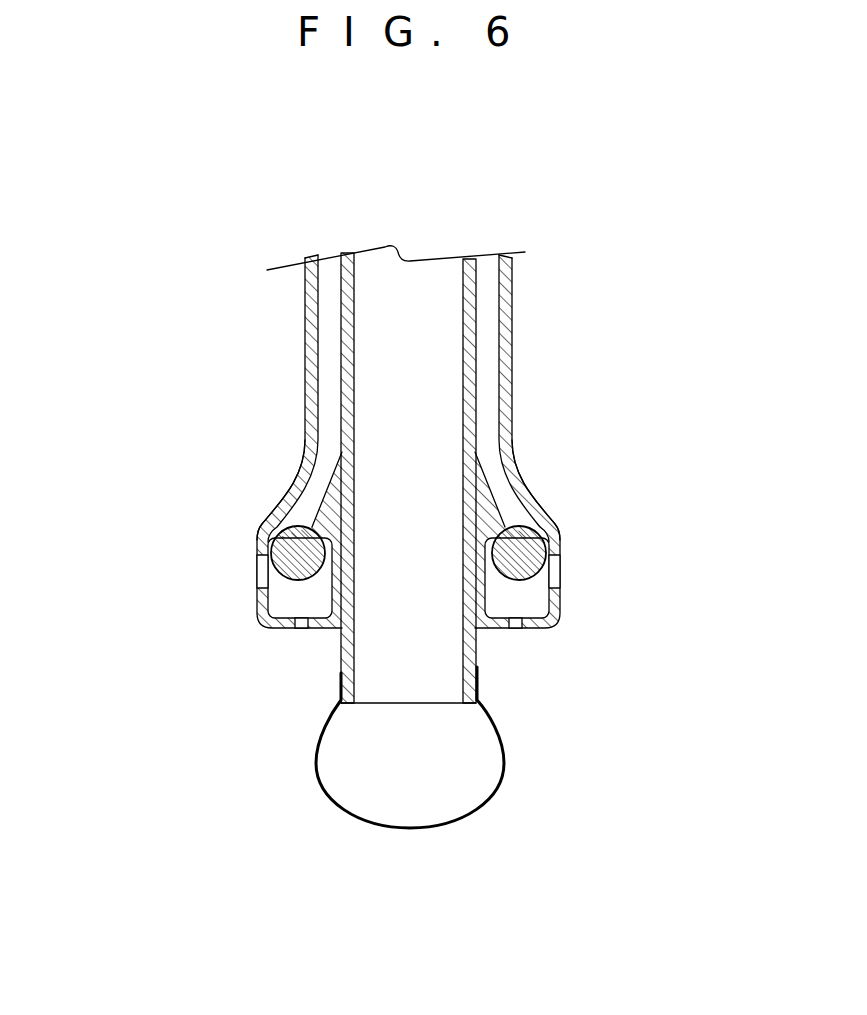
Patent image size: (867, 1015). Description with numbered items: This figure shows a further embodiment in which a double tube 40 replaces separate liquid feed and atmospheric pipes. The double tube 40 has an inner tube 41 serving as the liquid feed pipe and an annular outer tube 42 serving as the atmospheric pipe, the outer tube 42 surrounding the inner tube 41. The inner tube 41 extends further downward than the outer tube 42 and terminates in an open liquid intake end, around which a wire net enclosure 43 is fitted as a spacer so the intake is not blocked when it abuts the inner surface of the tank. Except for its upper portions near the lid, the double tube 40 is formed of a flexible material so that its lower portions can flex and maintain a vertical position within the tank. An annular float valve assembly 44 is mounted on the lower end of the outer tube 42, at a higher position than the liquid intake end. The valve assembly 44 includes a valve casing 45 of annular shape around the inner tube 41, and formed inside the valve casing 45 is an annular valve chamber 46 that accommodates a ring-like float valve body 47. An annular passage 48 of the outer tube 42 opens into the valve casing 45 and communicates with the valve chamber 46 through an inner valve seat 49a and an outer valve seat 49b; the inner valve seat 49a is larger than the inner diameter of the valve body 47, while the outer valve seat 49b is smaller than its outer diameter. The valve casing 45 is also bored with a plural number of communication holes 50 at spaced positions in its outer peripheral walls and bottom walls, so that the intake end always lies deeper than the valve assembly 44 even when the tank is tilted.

The double tube 40 is at (288, 325).
The inner tube 41 is at (472, 370).
The outer tube 42 is at (508, 308).
The wire net enclosure 43 is at (485, 813).
The float valve assembly 44 is at (568, 632).
The valve casing 45 is at (260, 622).
The valve chamber 46 is at (280, 603).
The float valve body 47 is at (258, 547).
The annular passage 48 is at (300, 520).
The inner valve seat 49a is at (506, 522).
The outer valve seat 49b is at (290, 532).
The communication holes 50 is at (258, 578).